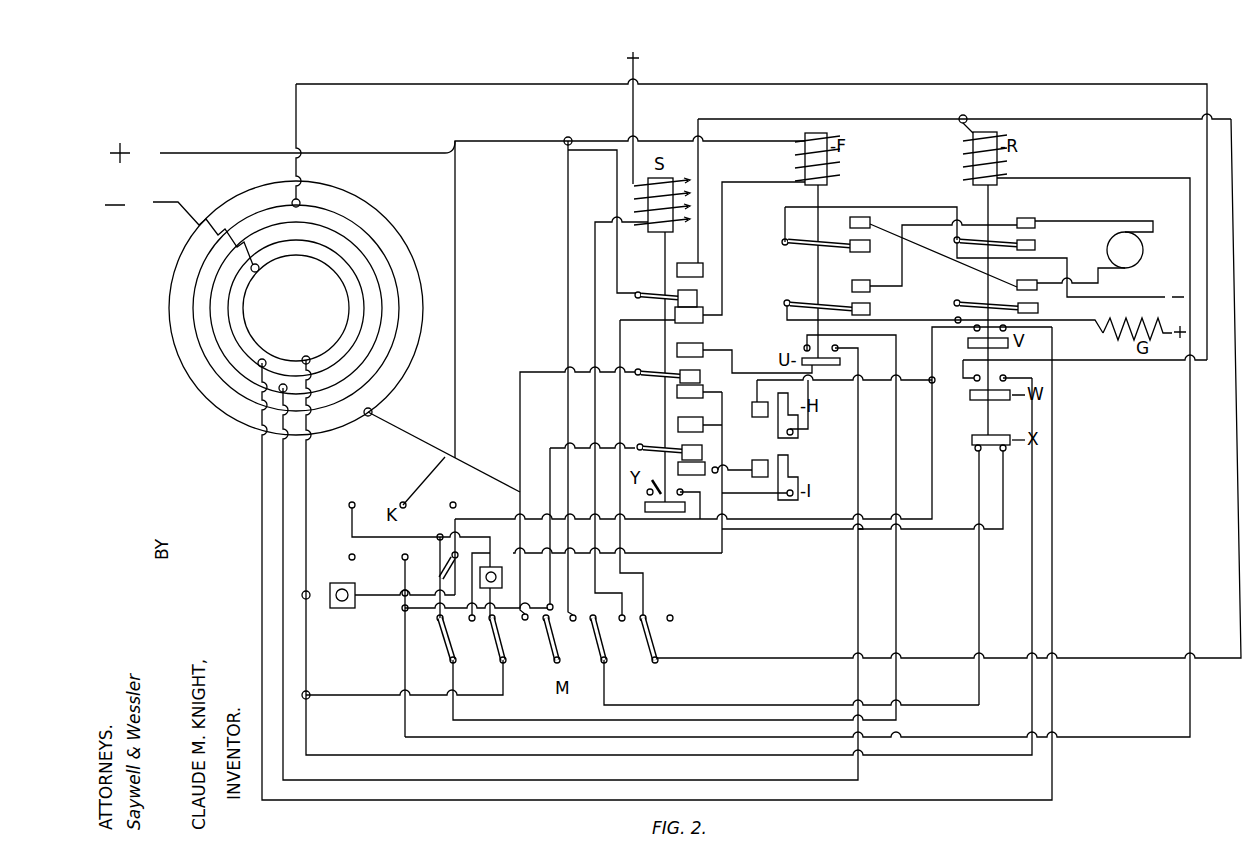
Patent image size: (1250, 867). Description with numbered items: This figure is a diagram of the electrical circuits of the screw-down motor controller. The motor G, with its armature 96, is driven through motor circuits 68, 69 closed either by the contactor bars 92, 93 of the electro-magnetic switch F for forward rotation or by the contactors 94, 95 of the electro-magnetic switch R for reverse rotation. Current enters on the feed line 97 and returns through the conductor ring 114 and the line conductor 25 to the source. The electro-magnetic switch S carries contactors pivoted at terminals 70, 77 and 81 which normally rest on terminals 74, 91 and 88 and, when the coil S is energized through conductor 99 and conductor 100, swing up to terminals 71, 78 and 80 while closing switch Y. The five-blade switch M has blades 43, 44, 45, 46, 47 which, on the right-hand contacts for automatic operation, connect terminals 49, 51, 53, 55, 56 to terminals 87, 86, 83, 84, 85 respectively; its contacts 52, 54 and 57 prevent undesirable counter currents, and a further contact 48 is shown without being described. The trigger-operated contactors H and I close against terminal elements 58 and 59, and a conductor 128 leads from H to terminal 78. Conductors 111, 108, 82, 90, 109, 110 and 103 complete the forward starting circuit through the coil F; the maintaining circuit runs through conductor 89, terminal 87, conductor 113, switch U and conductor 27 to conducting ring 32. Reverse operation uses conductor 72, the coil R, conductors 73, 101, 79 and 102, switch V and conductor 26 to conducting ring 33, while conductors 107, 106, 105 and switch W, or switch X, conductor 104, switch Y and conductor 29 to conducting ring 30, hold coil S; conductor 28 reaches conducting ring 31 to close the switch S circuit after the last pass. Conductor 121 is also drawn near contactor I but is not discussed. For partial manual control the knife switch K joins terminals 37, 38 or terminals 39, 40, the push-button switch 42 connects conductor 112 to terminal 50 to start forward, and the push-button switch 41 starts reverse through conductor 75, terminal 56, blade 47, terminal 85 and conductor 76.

The line conductor 25 is at (180, 222).
The conductor 26 is at (293, 808).
The conductor 27 is at (345, 795).
The conductor 28 is at (300, 127).
The conductor 29 is at (442, 450).
The conducting ring 30 is at (372, 199).
The conducting ring 31 is at (400, 296).
The conducting ring 32 is at (380, 281).
The conducting ring 33 is at (350, 350).
The terminal 37 is at (352, 500).
The terminal 38 is at (428, 498).
The terminal 39 is at (392, 560).
The terminal 40 is at (440, 576).
The push-button switch 41 is at (342, 612).
The push-button switch 42 is at (504, 580).
The switch blade 43 is at (429, 652).
The switch blade 44 is at (506, 639).
The switch blade 45 is at (549, 660).
The switch blade 46 is at (588, 641).
The switch blade 47 is at (670, 639).
The contact 48 is at (422, 641).
The terminal 49 is at (472, 622).
The terminal 50 is at (505, 627).
The terminal 51 is at (535, 603).
The contact 52 is at (558, 601).
The terminal 53 is at (585, 605).
The contact 54 is at (582, 632).
The terminal 55 is at (622, 622).
The terminal 56 is at (656, 601).
The contact 57 is at (676, 614).
The terminal element 58 is at (753, 378).
The terminal element 59 is at (758, 459).
The motor circuit 68 is at (1088, 272).
The motor circuit 69 is at (1098, 222).
The terminal 70 is at (638, 290).
The terminal 71 is at (705, 270).
The conductor 72 is at (964, 188).
The conductor 73 is at (797, 457).
The terminal 74 is at (706, 328).
The conductor 75 is at (663, 409).
The conductor 76 is at (1012, 652).
The terminal 77 is at (640, 369).
The terminal 78 is at (706, 345).
The conductor 79 is at (908, 378).
The terminal 80 is at (750, 410).
The terminal 81 is at (642, 442).
The conductor 82 is at (582, 526).
The terminal 83 is at (570, 672).
The terminal 84 is at (619, 672).
The terminal 85 is at (663, 652).
The terminal 86 is at (517, 672).
The terminal 87 is at (456, 674).
The contact 88 is at (708, 462).
The conductor 89 is at (792, 472).
The conductor 90 is at (735, 480).
The terminal 91 is at (706, 396).
The contactor bar 92 is at (835, 237).
The contactor bar 93 is at (838, 301).
The contactor 94 is at (1000, 232).
The contactor 95 is at (1003, 310).
The armature 96 is at (1125, 250).
The feed line 97 is at (390, 147).
The conductor 99 is at (640, 70).
The conductor 100 is at (617, 541).
The conductor 101 is at (426, 589).
The conductor 102 is at (753, 423).
The conductor 103 is at (1070, 522).
The conductor 104 is at (930, 501).
The conductor 105 is at (1070, 361).
The conductor 106 is at (970, 455).
The conductor 107 is at (790, 705).
The conductor 108 is at (591, 378).
The conductor 109 is at (518, 392).
The conductor 110 is at (375, 697).
The conductor 111 is at (477, 299).
The conductor 112 is at (460, 545).
The conductor 113 is at (681, 527).
The conductor ring 114 is at (250, 319).
The conductor 121 is at (757, 505).
The conductor 128 is at (820, 406).